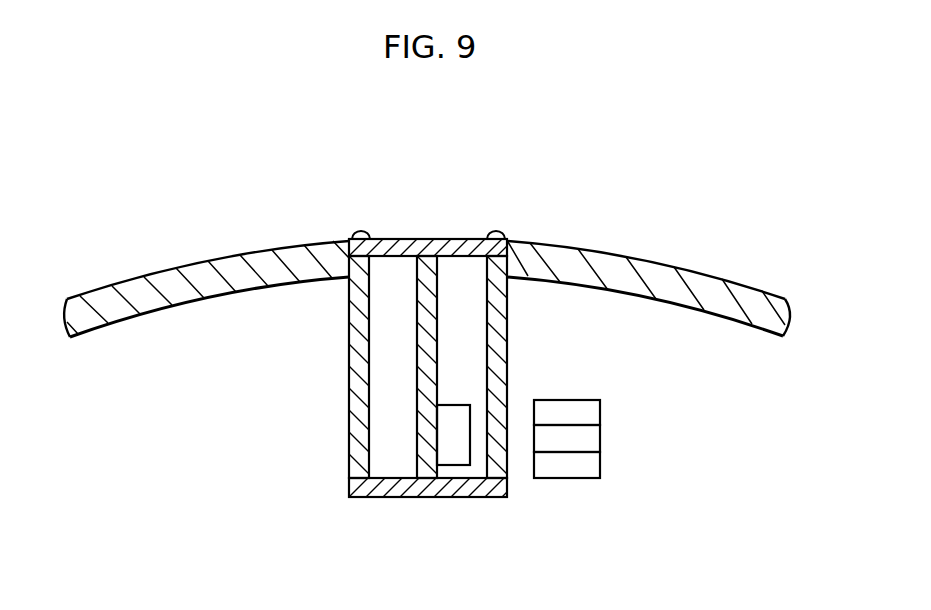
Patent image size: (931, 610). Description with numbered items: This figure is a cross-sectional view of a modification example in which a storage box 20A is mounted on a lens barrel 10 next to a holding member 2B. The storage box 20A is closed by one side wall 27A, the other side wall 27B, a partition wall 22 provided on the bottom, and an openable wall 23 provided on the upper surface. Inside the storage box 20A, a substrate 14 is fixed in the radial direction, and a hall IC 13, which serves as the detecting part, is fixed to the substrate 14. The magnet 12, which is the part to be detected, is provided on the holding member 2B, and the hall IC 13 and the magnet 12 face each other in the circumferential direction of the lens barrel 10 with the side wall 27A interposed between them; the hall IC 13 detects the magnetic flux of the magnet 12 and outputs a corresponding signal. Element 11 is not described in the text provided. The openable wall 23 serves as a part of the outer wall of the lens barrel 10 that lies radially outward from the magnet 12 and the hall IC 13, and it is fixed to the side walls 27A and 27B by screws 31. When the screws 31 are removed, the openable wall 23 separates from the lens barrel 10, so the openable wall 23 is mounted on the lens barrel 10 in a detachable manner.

The lens barrel 10 is at (652, 273).
The storage box 20A is at (430, 356).
The openable wall 23 is at (390, 238).
The side wall (partition wall) 27A is at (357, 390).
The side wall 27B is at (498, 345).
The substrate 14 is at (428, 358).
The hall IC (detecting part) 13 is at (455, 404).
The partition wall 22 is at (420, 500).
The screws 31 is at (355, 234).
The magnet (part to be detected) 12 is at (585, 412).
The amplifier 11 is at (587, 440).
The holding member 2B is at (587, 465).